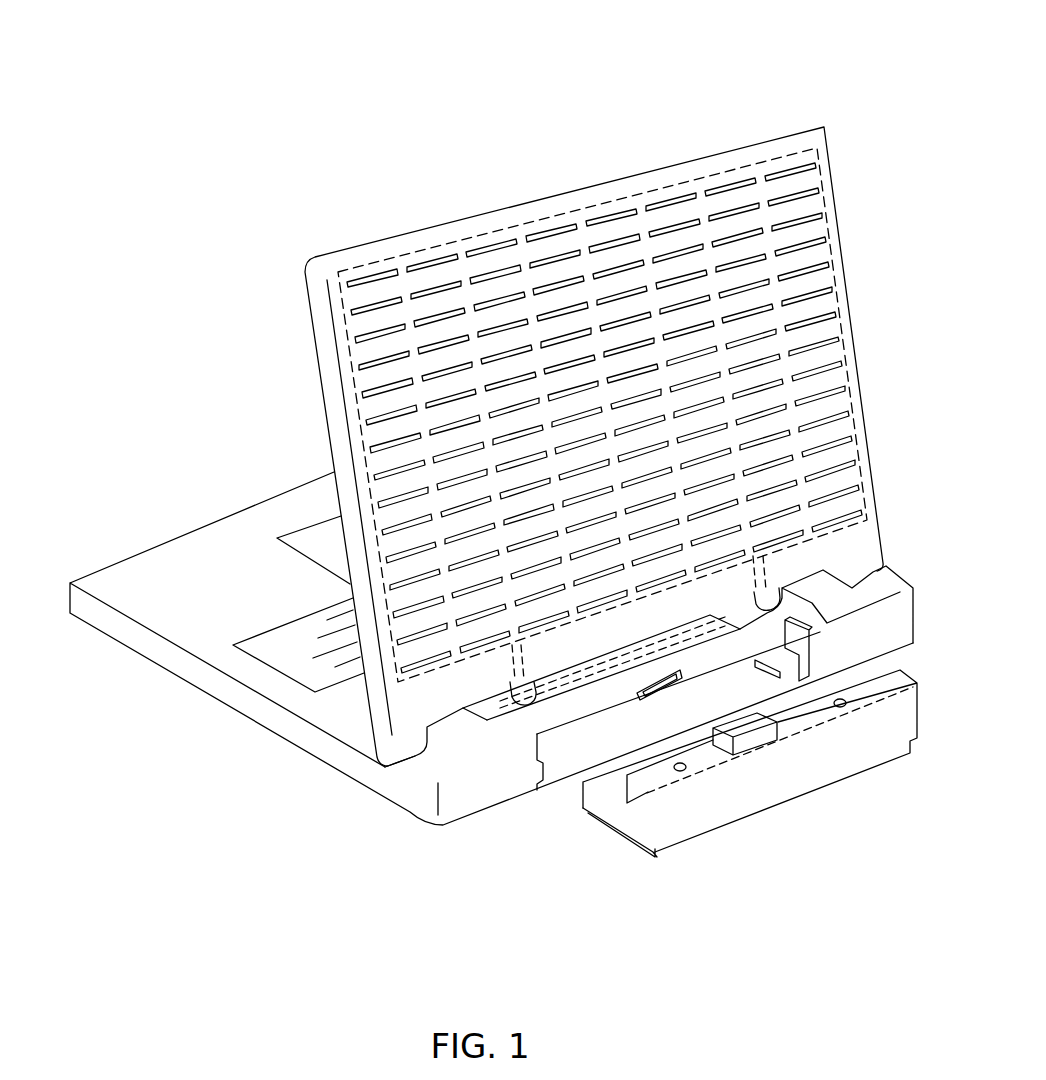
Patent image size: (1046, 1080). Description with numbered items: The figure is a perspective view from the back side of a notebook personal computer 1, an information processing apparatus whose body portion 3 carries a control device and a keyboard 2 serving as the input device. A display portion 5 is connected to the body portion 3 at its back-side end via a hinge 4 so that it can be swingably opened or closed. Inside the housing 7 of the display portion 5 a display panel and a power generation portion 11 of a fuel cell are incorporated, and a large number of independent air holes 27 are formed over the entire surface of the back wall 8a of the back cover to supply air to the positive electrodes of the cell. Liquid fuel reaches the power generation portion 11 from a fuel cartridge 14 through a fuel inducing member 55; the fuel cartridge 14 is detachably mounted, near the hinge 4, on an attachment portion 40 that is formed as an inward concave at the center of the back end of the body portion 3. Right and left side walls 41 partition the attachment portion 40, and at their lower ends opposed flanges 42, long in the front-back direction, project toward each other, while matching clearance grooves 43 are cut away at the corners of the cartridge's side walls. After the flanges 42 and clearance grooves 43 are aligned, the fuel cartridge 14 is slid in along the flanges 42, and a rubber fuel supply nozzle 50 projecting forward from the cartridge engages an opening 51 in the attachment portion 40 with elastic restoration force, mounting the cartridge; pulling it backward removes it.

The notebook personal computer 1 is at (831, 86).
The keyboard 2 is at (262, 645).
The body portion 3 is at (276, 735).
The hinge 4 is at (455, 727).
The display portion 5 is at (308, 252).
The housing 7 is at (328, 402).
The back wall 8a is at (838, 250).
The power generation portion 11 is at (487, 230).
The fuel cartridge 14 is at (790, 792).
The air holes 27 is at (727, 180).
The attachment portion 40 is at (567, 805).
The side walls 41 is at (535, 770).
The flanges 42 is at (548, 805).
The clearance grooves 43 is at (614, 838).
The fuel supply nozzle 50 is at (722, 754).
The opening 51 is at (654, 692).
The fuel inducing member 55 is at (542, 718).